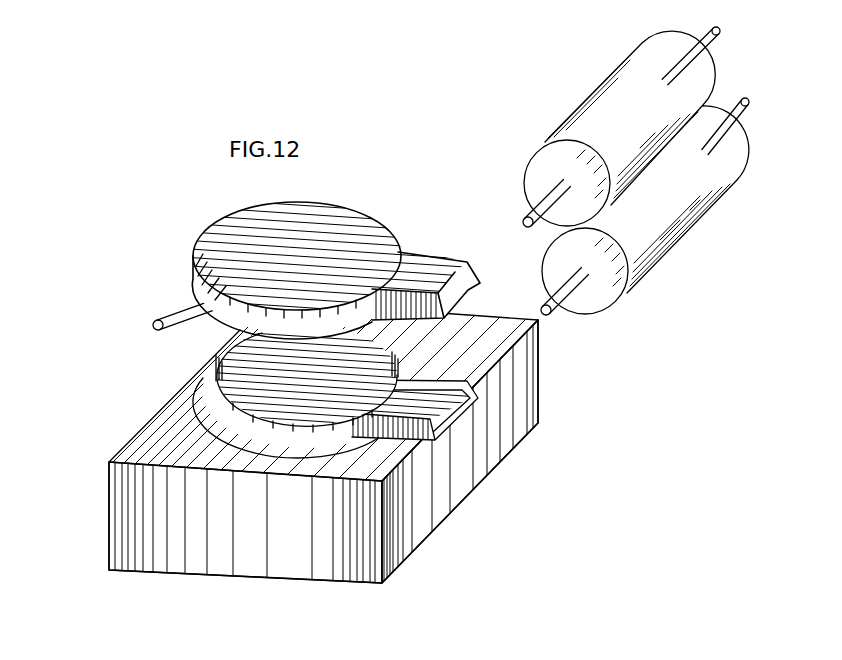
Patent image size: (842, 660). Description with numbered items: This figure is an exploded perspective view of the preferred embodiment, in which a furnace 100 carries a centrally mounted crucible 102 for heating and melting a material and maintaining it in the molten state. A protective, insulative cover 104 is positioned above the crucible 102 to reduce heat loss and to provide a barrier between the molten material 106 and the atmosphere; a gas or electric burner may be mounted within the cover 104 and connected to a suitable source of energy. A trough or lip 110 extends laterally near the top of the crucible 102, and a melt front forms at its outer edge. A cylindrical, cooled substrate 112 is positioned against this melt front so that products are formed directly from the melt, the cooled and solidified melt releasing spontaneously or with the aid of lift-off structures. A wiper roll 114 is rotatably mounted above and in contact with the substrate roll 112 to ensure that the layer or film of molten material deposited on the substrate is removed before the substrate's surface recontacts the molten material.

The furnace 100 is at (440, 502).
The crucible 102 is at (223, 417).
The protective, insulative cover 104 is at (270, 243).
The molten material 106 is at (290, 380).
The trough or lip 110 is at (466, 421).
The cylindrical, cooled substrate 112 is at (642, 228).
The wiper roll 114 is at (643, 93).